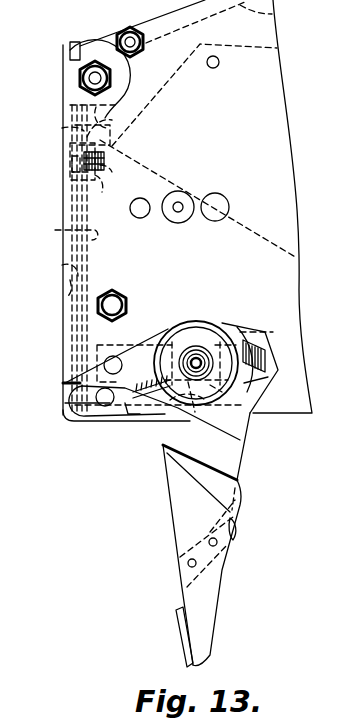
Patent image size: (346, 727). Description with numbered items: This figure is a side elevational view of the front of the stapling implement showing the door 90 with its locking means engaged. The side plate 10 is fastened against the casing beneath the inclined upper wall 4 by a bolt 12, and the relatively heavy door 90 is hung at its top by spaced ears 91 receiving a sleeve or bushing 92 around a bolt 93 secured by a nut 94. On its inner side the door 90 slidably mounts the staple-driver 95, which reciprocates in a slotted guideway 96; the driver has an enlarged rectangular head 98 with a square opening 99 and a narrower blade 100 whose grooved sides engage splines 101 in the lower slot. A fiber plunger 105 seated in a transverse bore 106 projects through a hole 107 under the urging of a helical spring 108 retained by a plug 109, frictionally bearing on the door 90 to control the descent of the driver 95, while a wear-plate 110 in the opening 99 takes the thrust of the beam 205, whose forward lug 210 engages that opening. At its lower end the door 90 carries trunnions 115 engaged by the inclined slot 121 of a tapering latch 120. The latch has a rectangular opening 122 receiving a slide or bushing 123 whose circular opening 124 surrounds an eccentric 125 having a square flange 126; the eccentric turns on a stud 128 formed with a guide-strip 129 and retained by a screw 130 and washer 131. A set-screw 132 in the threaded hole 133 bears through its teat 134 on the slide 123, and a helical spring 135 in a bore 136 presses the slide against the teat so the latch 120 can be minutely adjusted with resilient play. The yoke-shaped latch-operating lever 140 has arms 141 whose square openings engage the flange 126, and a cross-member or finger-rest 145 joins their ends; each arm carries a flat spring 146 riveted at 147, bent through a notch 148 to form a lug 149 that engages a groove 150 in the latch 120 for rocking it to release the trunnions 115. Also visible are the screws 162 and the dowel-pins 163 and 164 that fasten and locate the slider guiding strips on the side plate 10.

The upper wall 4 is at (270, 14).
The side plate 10 is at (274, 139).
The bolt 12 is at (130, 30).
The door 90 is at (68, 238).
The ears 91 is at (127, 75).
The sleeve or bushing 92 is at (110, 85).
The bolt 93 is at (90, 77).
The nut 94 is at (92, 99).
The staple-driver 95 is at (112, 144).
The slotted guideway 96 is at (59, 268).
The head 98 is at (106, 160).
The opening 99 is at (61, 137).
The blade 100 is at (68, 282).
The splines 101 is at (66, 360).
The plunger 105 is at (74, 173).
The transverse bore 106 is at (107, 128).
The hole 107 is at (72, 163).
The helical spring 108 is at (107, 187).
The plug or closure 109 is at (118, 175).
The wear-plate 110 is at (70, 150).
The trunnions 115 is at (64, 388).
The latch or locking member 120 is at (153, 337).
The inclined slot 121 is at (118, 428).
The rectangular opening 122 is at (261, 322).
The slide or bushing 123 is at (258, 395).
The circular opening 124 is at (212, 390).
The eccentric member 125 is at (180, 325).
The square flange 126 is at (252, 400).
The stud 128 is at (215, 397).
The guide-strip 129 is at (140, 320).
The screw 130 is at (206, 340).
The washer 131 is at (198, 358).
The set-screw 132 is at (262, 345).
The threaded hole 133 is at (268, 362).
The teat 134 is at (267, 378).
The helical spring 135 is at (128, 336).
The bore 136 is at (145, 380).
The latch-operating lever 140 is at (253, 461).
The arms 141 is at (172, 497).
The cross-member or finger-rest 145 is at (180, 632).
The flat spring 146 is at (237, 508).
The rivets 147 is at (195, 559).
The notch 148 is at (143, 418).
The lug 149 is at (163, 444).
The groove 150 is at (140, 432).
The screws 162 is at (181, 192).
The dowel-pin 163 is at (140, 198).
The dowel-pin 164 is at (218, 197).
The beam 205 is at (253, 241).
The lug 210 is at (112, 110).